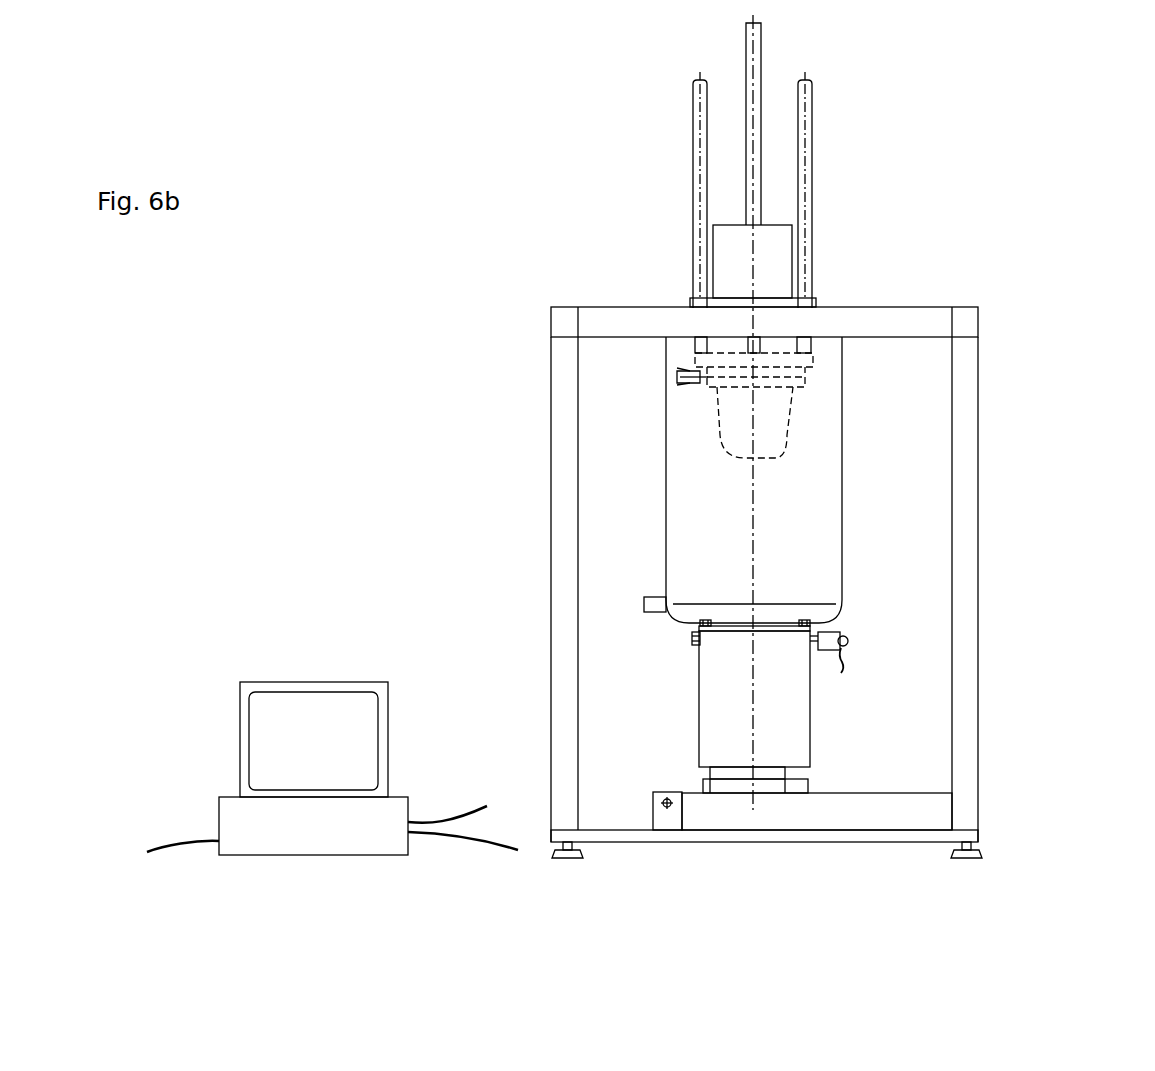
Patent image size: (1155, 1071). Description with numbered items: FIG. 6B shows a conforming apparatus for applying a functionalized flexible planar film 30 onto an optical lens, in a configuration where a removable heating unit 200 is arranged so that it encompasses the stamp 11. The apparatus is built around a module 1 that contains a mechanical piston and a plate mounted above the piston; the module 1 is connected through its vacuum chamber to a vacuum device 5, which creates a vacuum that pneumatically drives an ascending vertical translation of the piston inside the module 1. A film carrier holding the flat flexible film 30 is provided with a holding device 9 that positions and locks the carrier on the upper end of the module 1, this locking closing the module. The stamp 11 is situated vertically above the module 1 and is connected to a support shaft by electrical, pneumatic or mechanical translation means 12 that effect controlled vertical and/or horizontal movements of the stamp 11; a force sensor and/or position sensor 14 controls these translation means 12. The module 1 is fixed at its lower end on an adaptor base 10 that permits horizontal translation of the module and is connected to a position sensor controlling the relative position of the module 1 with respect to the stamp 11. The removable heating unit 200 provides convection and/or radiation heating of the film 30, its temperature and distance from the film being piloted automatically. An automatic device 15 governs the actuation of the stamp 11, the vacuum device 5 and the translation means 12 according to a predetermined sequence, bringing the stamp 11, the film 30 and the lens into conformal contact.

The module 1 is at (722, 713).
The vacuum device 5 is at (690, 636).
The holding device 9 is at (828, 641).
The adaptor base 10 is at (903, 814).
The stamp 11 is at (730, 419).
The translation means 12 is at (732, 266).
The force sensor and/or position sensor 14 is at (696, 375).
The automatic device 15 is at (300, 732).
The flexible planar film 30 is at (775, 627).
The removable heating unit 200 is at (690, 484).